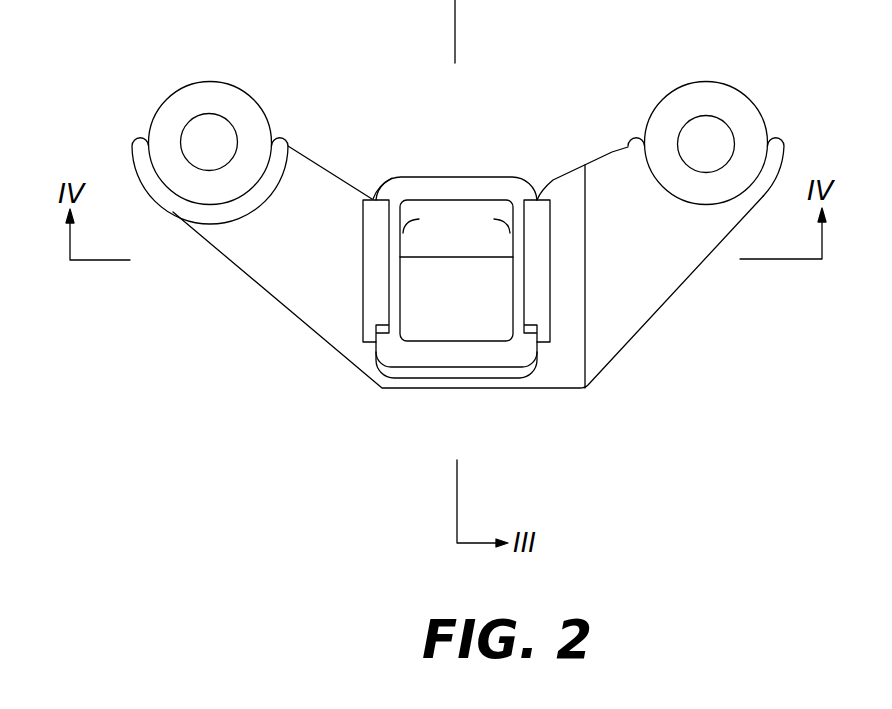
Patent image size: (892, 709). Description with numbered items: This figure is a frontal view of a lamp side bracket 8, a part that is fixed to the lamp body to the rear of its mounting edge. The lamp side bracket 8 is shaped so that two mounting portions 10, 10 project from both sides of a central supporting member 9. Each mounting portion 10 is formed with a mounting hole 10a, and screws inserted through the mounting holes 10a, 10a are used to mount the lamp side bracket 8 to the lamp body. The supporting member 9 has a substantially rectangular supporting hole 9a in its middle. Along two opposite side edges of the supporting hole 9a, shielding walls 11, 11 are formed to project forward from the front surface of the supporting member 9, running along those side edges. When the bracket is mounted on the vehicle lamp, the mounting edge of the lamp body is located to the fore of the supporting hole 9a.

The lamp side bracket 8 is at (657, 288).
The supporting member 9 is at (503, 175).
The supporting hole 9a is at (433, 337).
The mounting portion 10 is at (253, 111).
The mounting hole 10a is at (189, 159).
The shielding wall 11 is at (361, 218).